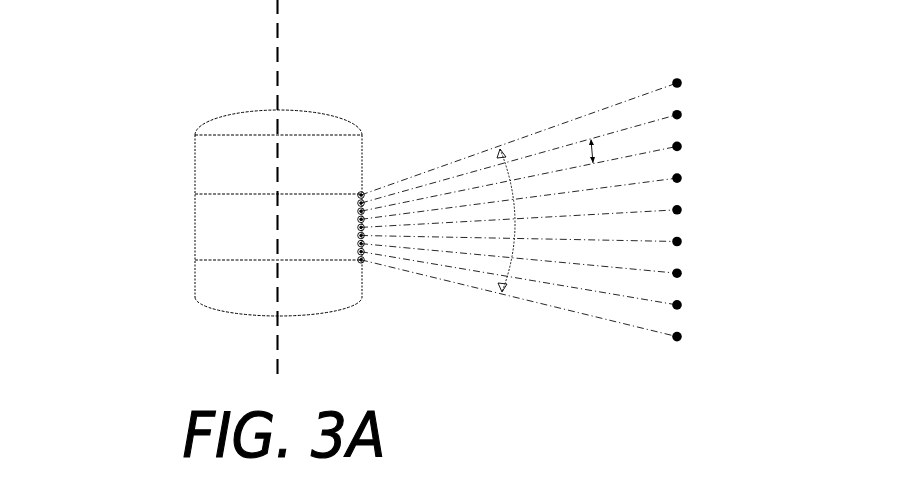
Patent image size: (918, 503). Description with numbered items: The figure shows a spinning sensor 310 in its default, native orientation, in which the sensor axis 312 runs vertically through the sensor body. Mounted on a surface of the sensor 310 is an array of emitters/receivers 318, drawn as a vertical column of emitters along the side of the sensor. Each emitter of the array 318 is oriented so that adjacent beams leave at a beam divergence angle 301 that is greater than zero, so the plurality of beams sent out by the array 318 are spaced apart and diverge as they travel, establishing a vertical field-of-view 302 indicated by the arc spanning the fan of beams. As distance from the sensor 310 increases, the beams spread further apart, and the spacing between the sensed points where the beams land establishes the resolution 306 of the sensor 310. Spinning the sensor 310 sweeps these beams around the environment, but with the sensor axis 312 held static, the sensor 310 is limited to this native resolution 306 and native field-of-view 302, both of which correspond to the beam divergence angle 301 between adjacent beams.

The beam divergence angle 301 is at (590, 147).
The vertical field-of-view 302 is at (507, 177).
The resolution 306 is at (680, 112).
The sensor 310 is at (194, 181).
The sensor axis 312 is at (276, 29).
The array of emitters/receivers 318 is at (360, 192).